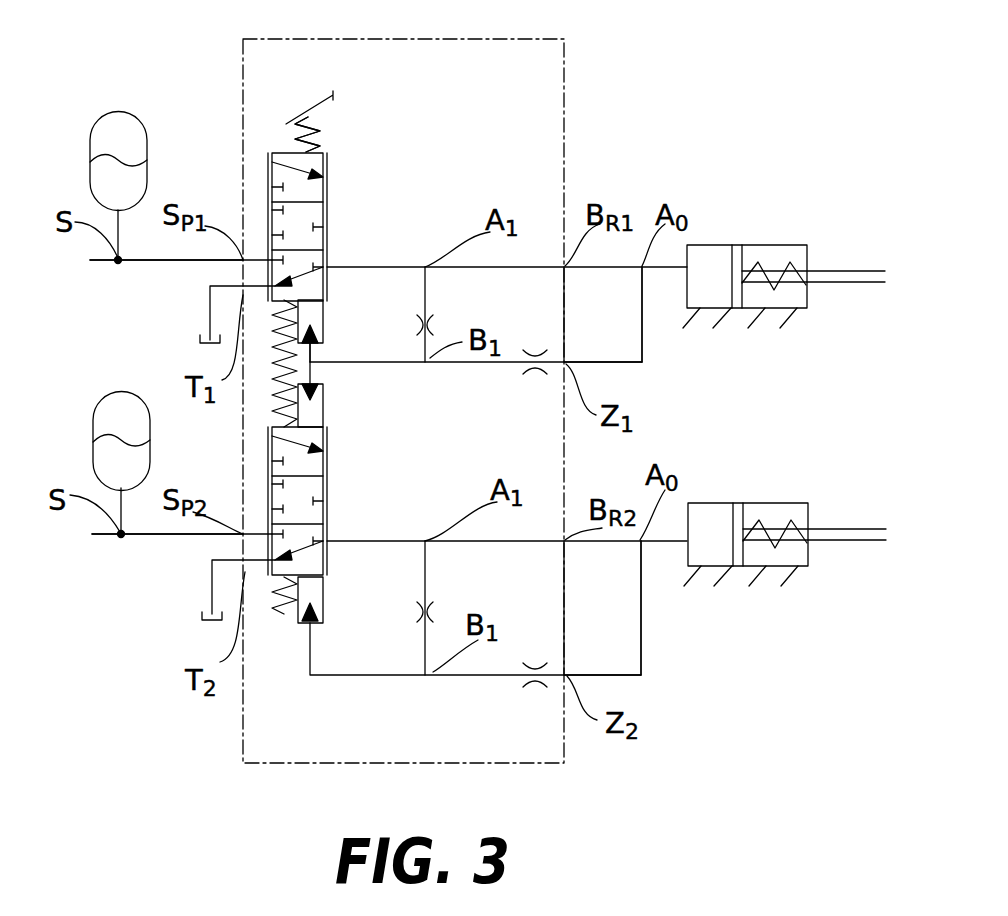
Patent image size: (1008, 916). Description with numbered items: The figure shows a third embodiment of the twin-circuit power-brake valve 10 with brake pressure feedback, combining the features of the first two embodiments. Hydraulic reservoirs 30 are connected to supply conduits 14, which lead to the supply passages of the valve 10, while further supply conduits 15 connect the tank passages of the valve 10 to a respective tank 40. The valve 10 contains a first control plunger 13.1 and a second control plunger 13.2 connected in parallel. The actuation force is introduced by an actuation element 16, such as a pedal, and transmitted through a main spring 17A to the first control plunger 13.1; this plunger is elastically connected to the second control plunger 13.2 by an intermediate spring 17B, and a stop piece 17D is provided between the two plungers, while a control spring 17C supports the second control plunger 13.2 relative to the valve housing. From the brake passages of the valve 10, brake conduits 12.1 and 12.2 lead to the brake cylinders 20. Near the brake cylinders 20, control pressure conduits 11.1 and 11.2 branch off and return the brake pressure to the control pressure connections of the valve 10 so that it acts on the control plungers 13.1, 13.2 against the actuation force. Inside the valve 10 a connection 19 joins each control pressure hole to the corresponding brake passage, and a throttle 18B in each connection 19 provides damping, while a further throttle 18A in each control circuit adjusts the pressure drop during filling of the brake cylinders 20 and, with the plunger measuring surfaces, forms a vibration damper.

The power-brake valve 10 is at (583, 66).
The control pressure conduit 11.1 is at (645, 325).
The control pressure conduit 11.2 is at (644, 625).
The brake conduit 12.1 is at (627, 272).
The brake conduit 12.2 is at (627, 545).
The first control plunger 13.1 is at (323, 240).
The second control plunger 13.2 is at (323, 497).
The supply conduit 14 is at (112, 262).
The supply conduit 15 is at (210, 305).
The actuation element 16 is at (312, 107).
The main spring 17A is at (323, 128).
The intermediate spring 17B is at (312, 368).
The control spring 17C is at (286, 612).
The stop piece 17D is at (272, 398).
The throttle 18A is at (535, 374).
The throttle 18B is at (432, 326).
The connection 19 is at (423, 360).
The brake cylinder 20 is at (785, 238).
The hydraulic reservoir 30 is at (112, 86).
The tank 40 is at (190, 355).